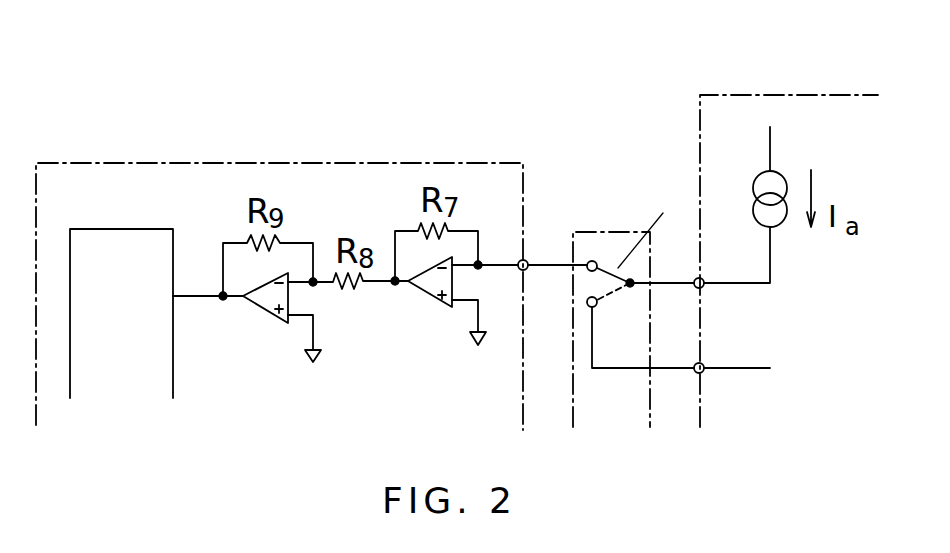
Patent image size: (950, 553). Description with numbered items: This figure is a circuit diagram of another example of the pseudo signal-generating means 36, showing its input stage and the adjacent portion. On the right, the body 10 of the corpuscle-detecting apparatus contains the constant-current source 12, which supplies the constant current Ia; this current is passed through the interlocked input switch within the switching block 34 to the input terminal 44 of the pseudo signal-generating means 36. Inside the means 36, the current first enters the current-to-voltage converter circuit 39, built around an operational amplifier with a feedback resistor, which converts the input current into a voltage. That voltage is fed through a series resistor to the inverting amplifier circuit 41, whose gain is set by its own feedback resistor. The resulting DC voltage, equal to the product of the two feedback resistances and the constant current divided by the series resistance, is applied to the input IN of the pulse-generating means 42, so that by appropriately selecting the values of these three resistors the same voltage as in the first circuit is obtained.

The body of the apparatus 10 is at (713, 92).
The constant-current source 12 is at (780, 172).
The switch unit 34 is at (604, 230).
The pseudo signal-generating means 36 is at (293, 163).
The current-to-voltage converter circuit 39 is at (428, 295).
The inverting amplifier circuit 41 is at (260, 307).
The pulse-generating means 42 is at (116, 229).
The input terminal 44 is at (524, 259).